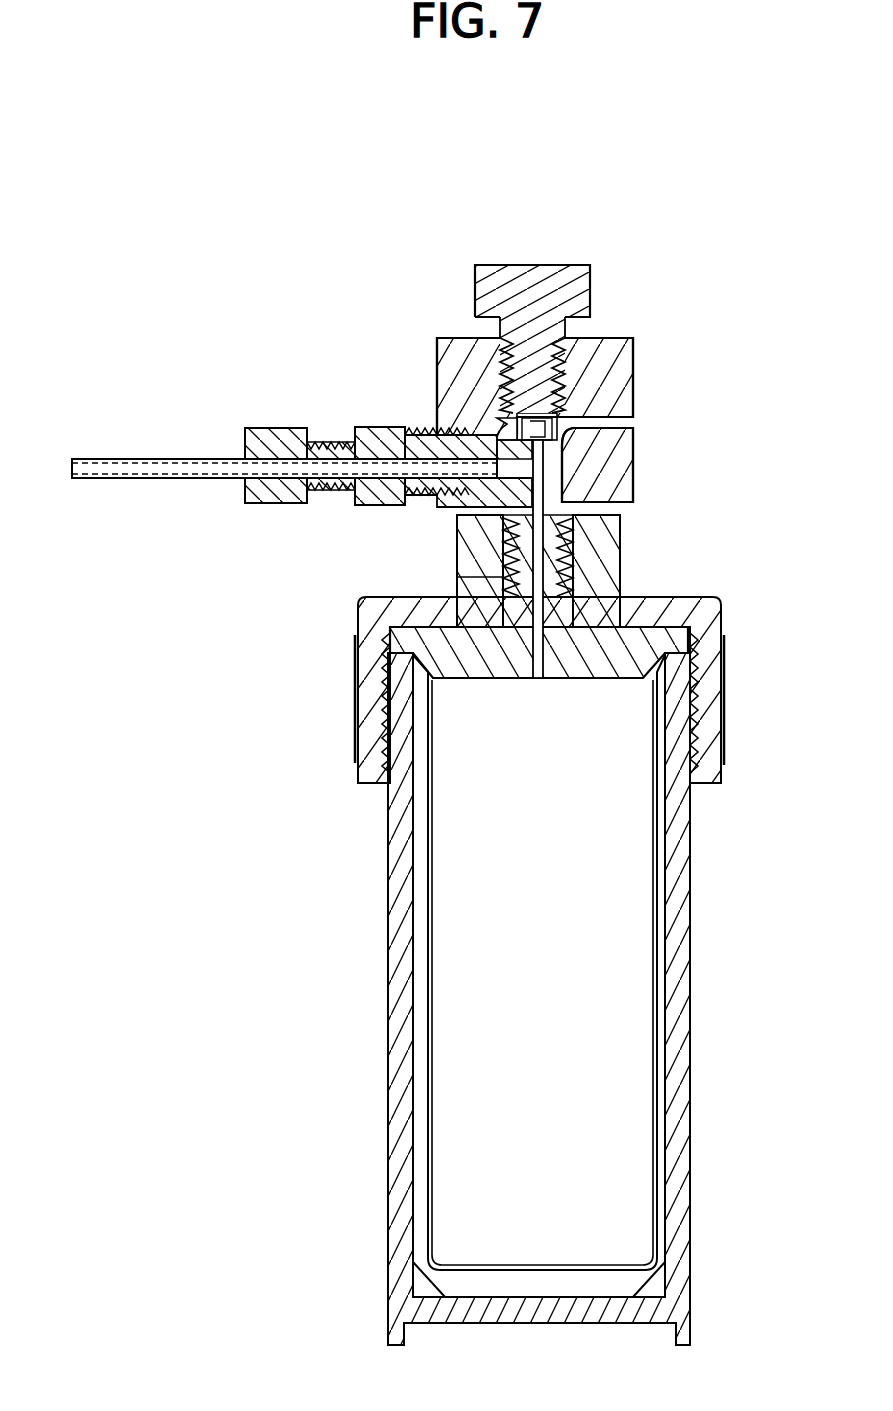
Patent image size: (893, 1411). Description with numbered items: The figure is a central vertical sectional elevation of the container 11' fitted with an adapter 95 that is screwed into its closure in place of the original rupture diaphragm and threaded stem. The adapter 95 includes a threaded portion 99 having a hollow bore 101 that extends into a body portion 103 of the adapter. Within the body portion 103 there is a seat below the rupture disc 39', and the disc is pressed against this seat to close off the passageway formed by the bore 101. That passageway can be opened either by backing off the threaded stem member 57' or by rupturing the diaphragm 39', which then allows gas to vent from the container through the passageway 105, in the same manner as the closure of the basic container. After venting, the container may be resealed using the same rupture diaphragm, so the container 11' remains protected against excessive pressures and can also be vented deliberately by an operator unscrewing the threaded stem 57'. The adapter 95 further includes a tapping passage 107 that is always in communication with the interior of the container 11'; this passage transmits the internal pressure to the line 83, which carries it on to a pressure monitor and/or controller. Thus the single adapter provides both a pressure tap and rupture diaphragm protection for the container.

The container 11' is at (574, 971).
The threaded stem member 57' is at (579, 336).
The passageway 105 is at (597, 418).
The adapter 95 is at (640, 402).
The body portion 103 is at (633, 473).
The tapping passage 107 is at (500, 447).
The rupture disc 39' is at (620, 558).
The hollow bore 101 is at (537, 533).
The threaded portion 99 is at (572, 553).
The line 83 is at (140, 478).